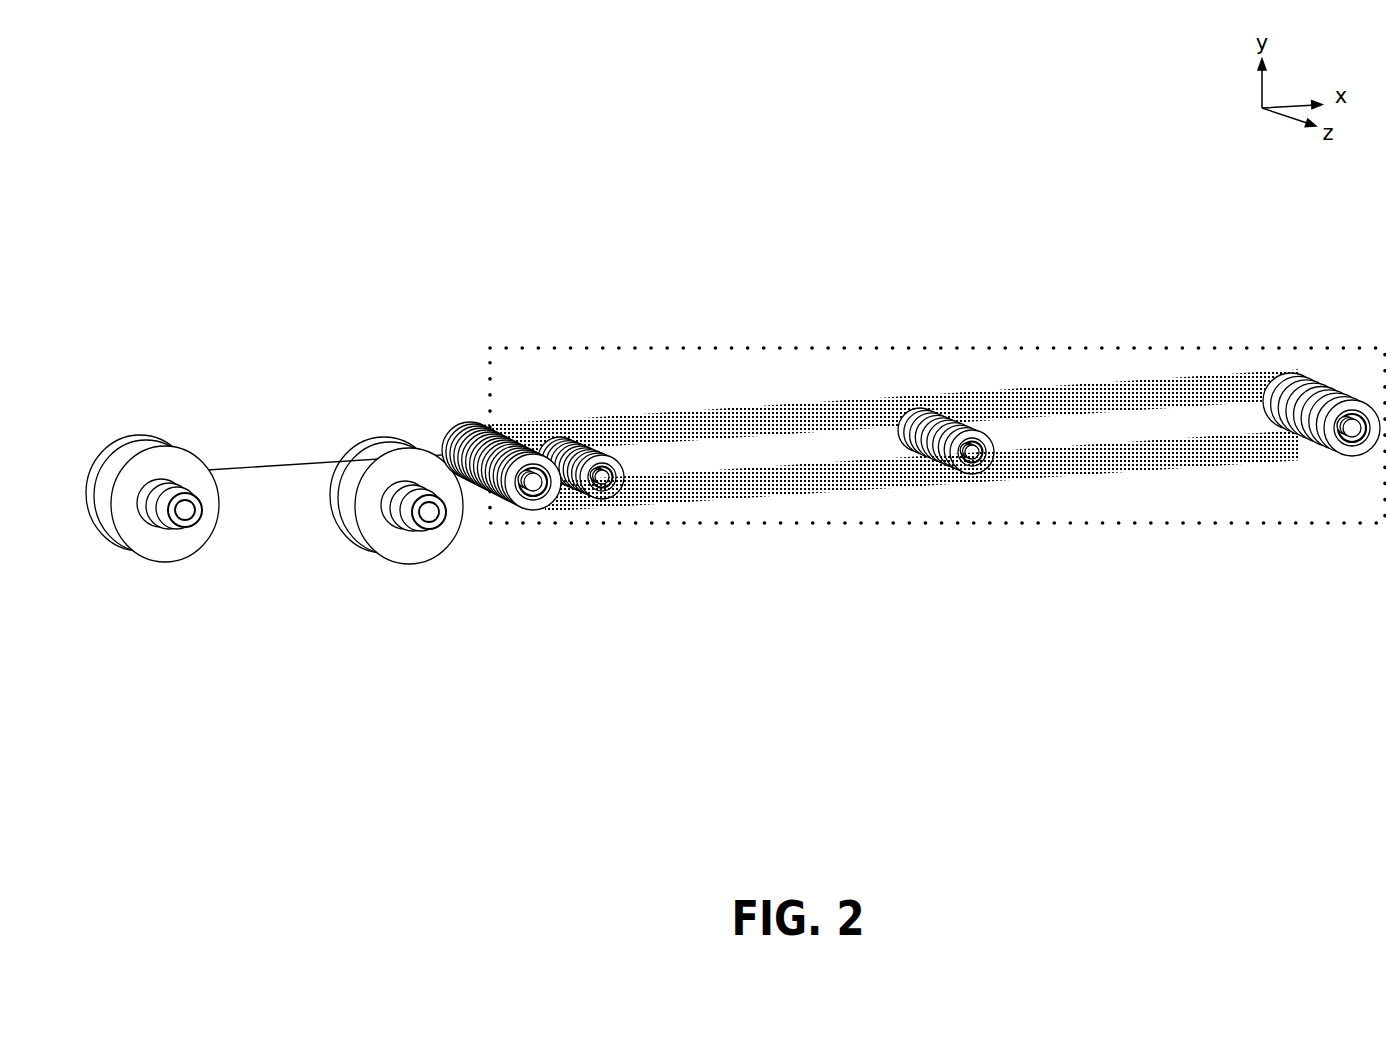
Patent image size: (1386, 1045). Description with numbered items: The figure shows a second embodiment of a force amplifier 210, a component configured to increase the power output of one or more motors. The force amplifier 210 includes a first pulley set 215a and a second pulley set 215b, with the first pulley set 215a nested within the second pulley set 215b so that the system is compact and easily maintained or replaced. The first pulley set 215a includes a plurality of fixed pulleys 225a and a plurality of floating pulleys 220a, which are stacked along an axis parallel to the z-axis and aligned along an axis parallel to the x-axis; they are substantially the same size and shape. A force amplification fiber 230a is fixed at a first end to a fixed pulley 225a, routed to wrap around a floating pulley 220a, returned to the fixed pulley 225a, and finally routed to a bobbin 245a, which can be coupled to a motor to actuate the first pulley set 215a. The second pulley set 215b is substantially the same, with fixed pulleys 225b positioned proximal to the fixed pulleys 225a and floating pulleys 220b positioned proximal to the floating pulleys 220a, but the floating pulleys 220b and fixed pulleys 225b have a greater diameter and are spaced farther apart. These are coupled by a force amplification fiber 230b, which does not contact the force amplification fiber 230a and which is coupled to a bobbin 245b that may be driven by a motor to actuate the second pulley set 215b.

The force amplifier 210 is at (1182, 348).
The first pulley set 215a is at (887, 286).
The second pulley set 215b is at (911, 590).
The floating pulley 220a is at (938, 350).
The floating pulley 220b is at (1347, 457).
The fixed pulley 225a is at (595, 458).
The fixed pulley 225b is at (537, 506).
The force amplification fiber 230a is at (736, 440).
The force amplification fiber 230b is at (846, 483).
The bobbin 245a is at (392, 470).
The bobbin 245b is at (160, 548).